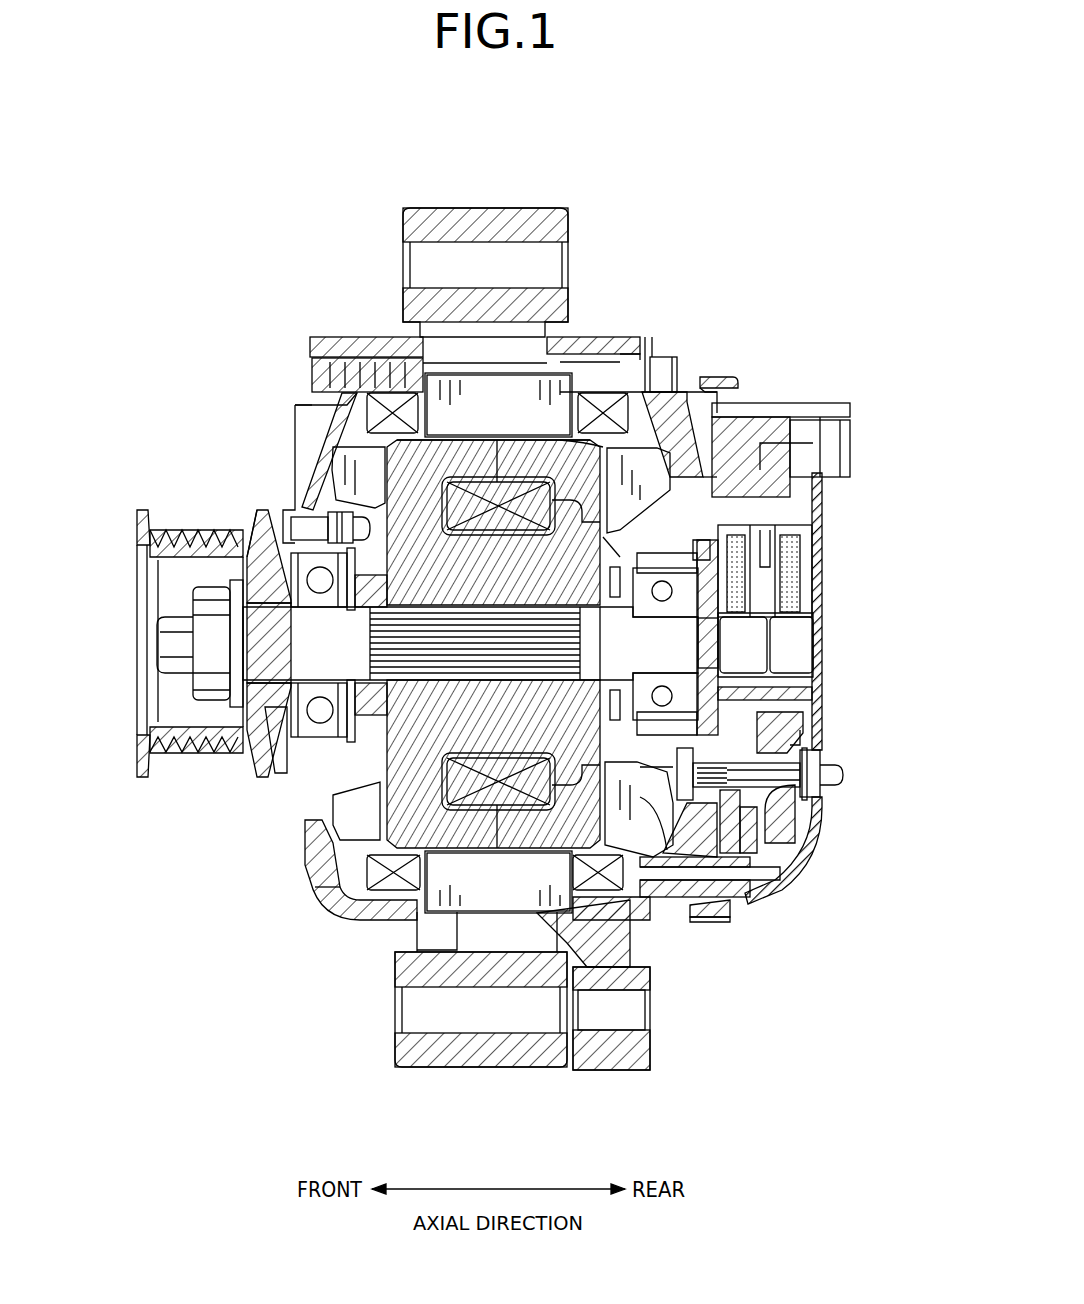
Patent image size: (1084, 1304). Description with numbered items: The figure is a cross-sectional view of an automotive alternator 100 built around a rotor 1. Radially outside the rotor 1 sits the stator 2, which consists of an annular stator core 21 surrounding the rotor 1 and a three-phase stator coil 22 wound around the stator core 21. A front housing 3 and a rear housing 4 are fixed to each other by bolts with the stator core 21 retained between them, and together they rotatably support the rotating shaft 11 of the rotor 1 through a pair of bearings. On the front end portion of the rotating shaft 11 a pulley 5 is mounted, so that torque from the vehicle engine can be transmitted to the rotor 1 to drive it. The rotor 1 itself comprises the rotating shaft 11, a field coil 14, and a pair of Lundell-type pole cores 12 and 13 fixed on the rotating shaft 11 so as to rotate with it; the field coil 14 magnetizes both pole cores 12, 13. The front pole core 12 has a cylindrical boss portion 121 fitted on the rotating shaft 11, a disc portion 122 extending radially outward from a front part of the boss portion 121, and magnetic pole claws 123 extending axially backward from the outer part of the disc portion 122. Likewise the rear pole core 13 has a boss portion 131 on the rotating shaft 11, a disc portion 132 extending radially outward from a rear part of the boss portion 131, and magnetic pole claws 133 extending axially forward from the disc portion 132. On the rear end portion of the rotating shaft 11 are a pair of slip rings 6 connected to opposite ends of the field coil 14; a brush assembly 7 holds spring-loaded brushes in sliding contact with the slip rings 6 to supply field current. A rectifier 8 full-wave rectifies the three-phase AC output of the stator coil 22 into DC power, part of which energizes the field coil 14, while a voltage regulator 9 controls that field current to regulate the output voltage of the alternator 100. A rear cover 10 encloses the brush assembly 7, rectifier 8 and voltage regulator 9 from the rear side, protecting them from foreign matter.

The alternator 100 is at (683, 150).
The rotor 1 is at (305, 460).
The stator 2 is at (558, 402).
The stator core 21 is at (498, 412).
The three-phase stator coil 22 is at (392, 400).
The front housing 3 is at (300, 455).
The rear housing 4 is at (690, 395).
The pulley 5 is at (140, 735).
The slip rings 6 is at (775, 652).
The brush assembly 7 is at (805, 575).
The rectifier 8 is at (815, 822).
The voltage regulator 9 is at (790, 420).
The rear cover 10 is at (830, 860).
The rotating shaft 11 is at (268, 750).
The pole core 12 is at (422, 818).
The pole core 13 is at (773, 895).
The field coil 14 is at (498, 790).
The boss portion 121 is at (258, 538).
The disc portion 122 is at (293, 432).
The magnetic pole claws 123 is at (472, 445).
The boss portion 131 is at (800, 745).
The disc portion 132 is at (735, 522).
The magnetic pole claws 133 is at (522, 830).